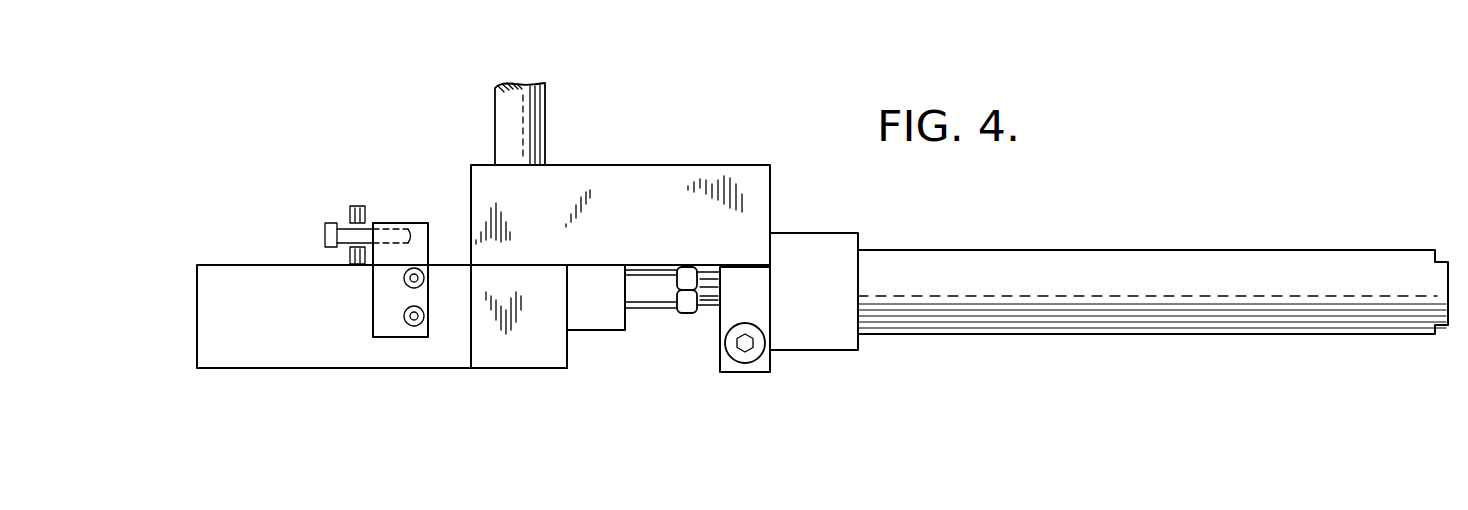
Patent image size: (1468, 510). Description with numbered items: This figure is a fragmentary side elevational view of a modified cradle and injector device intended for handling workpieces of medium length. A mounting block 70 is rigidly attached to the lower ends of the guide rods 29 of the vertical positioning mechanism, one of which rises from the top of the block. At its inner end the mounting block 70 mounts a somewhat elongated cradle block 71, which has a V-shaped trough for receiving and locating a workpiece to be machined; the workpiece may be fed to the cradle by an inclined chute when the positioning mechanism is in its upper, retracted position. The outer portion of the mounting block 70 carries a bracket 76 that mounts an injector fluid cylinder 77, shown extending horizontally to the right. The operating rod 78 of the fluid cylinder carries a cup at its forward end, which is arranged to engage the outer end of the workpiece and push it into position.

The guide rods 29 is at (545, 93).
The mounting block 70 is at (622, 175).
The cradle block 71 is at (310, 355).
The bracket 76 is at (732, 312).
The injector fluid cylinder 77 is at (1160, 265).
The operating rod 78 is at (712, 283).